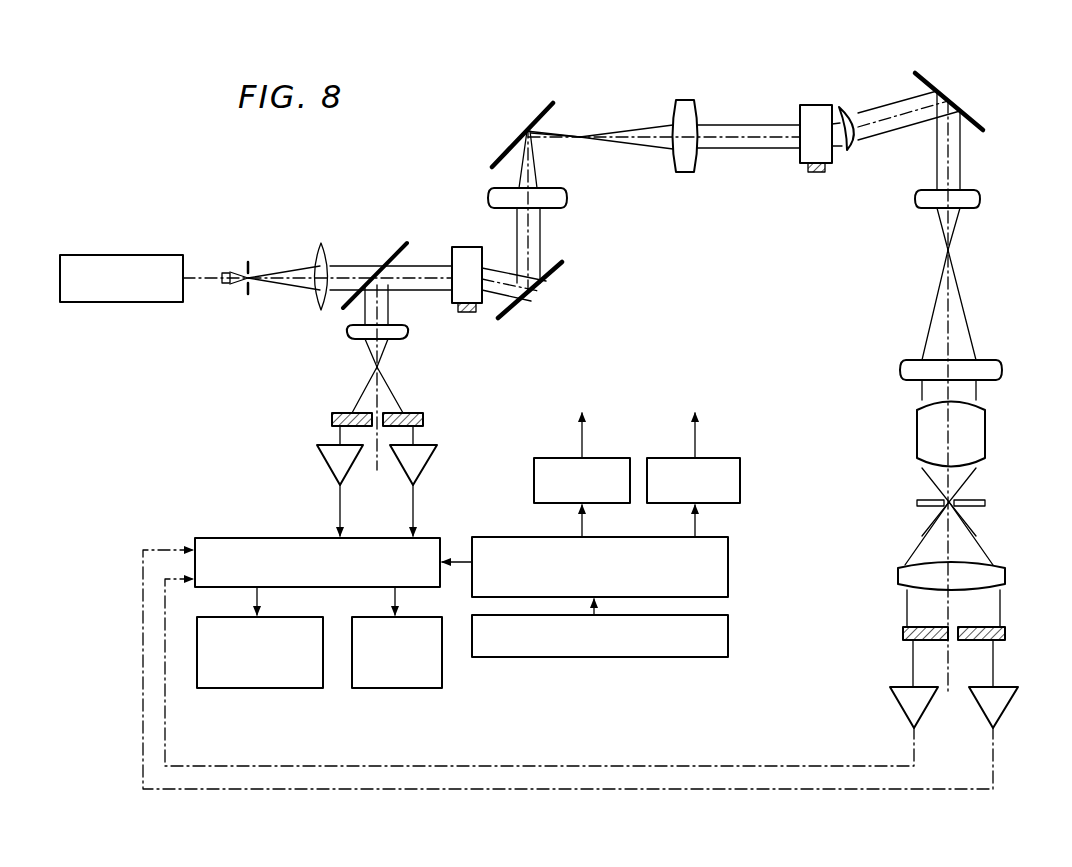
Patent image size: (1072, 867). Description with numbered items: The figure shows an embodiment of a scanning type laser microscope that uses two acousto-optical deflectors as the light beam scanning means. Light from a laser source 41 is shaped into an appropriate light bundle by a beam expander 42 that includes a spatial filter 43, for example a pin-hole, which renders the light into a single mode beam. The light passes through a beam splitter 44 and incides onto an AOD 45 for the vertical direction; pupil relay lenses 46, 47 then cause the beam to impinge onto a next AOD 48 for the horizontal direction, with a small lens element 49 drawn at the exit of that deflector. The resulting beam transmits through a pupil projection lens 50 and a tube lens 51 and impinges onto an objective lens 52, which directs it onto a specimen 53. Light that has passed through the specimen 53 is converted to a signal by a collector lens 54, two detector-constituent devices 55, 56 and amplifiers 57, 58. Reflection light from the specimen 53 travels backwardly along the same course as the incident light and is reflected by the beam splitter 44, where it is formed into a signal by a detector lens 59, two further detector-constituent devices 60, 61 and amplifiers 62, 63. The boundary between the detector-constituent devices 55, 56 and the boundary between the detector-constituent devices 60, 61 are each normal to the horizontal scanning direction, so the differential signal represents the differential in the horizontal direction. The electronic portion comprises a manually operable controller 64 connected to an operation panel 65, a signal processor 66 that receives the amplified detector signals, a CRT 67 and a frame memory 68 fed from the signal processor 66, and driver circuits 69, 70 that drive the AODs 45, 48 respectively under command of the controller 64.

The laser source 41 is at (108, 255).
The beam expander 42 is at (330, 240).
The spatial filter 43 is at (245, 300).
The beam splitter 44 is at (393, 257).
The AOD 45 is at (484, 301).
The pupil relay lens 46 is at (567, 200).
The pupil relay lens 47 is at (682, 172).
The AOD 48 is at (800, 163).
The cylindrical lens 49 is at (851, 150).
The pupil projection lens 50 is at (980, 203).
The tube lens 51 is at (1002, 366).
The objective lens 52 is at (985, 430).
The specimen 53 is at (985, 502).
The collector lens 54 is at (1005, 576).
The detector-constituent device 55 is at (1005, 633).
The detector-constituent device 56 is at (903, 633).
The amplifier 57 is at (1010, 700).
The amplifier 58 is at (892, 703).
The detector lens 59 is at (346, 335).
The detector-constituent device 60 is at (423, 419).
The detector-constituent device 61 is at (332, 420).
The amplifier 62 is at (430, 458).
The amplifier 63 is at (322, 458).
The controller 64 is at (728, 563).
The operation panel 65 is at (728, 630).
The signal processor 66 is at (235, 538).
The CRT 67 is at (420, 688).
The frame memory 68 is at (296, 688).
The driver circuit 69 is at (546, 458).
The driver circuit 70 is at (740, 470).